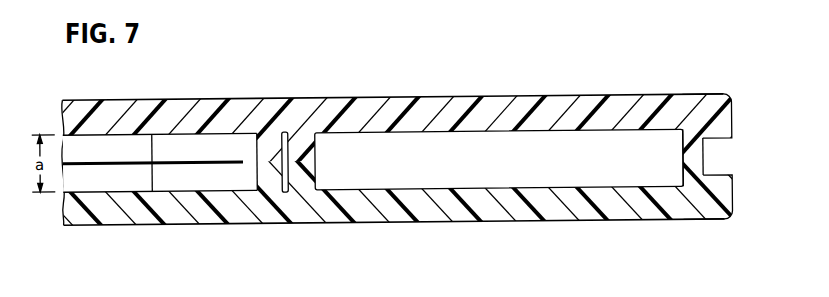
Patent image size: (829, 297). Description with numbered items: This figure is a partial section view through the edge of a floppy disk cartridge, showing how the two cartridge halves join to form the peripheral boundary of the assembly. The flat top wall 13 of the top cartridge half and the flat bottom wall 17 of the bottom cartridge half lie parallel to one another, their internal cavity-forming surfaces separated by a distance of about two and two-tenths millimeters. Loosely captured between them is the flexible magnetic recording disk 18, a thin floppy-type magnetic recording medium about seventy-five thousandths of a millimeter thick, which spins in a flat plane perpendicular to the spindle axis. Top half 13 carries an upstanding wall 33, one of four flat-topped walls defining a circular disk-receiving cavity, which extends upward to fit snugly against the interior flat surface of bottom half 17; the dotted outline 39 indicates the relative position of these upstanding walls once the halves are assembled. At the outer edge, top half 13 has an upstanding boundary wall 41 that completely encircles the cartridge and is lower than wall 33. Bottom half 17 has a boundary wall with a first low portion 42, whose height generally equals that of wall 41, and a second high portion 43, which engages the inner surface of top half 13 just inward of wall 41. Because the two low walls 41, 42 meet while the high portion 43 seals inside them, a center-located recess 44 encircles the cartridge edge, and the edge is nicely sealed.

The top wall 13 is at (370, 103).
The bottom wall 17 is at (372, 215).
The flexible magnetic recording disk 18 is at (190, 161).
The upstanding wall 33 is at (267, 162).
The dotted outline 39 is at (317, 164).
The upstanding boundary wall 41 is at (722, 126).
The first low portion 42 is at (723, 191).
The second high portion 43 is at (690, 155).
The center-located recess 44 is at (717, 161).